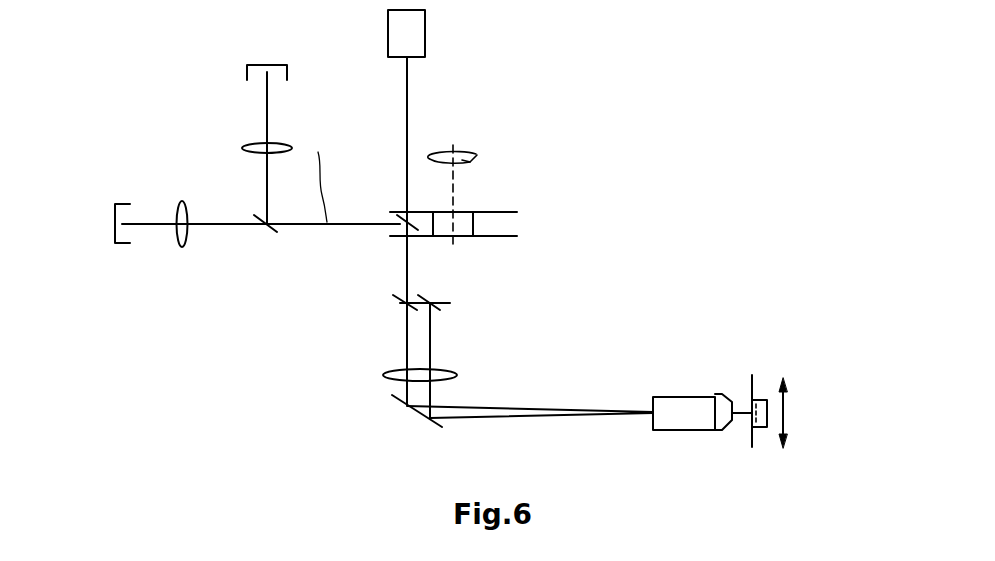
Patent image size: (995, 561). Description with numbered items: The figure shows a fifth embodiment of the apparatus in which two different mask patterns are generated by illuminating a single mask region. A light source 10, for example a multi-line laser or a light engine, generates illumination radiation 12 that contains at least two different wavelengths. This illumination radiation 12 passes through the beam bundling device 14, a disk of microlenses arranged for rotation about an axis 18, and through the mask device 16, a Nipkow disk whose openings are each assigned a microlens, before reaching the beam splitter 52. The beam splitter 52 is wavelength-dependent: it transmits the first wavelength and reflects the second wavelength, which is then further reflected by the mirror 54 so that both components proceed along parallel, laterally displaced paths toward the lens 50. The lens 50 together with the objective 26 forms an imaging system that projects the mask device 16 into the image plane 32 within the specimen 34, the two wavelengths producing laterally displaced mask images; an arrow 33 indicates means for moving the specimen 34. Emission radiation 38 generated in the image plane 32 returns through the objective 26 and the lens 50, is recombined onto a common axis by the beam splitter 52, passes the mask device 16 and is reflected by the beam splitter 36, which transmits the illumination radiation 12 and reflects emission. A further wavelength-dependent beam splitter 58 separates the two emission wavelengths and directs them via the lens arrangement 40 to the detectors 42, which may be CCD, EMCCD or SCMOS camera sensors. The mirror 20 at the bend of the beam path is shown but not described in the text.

The light source 10 is at (395, 40).
The illumination radiation 12 is at (407, 105).
The beam bundling device 14 is at (485, 212).
The mask device 16 is at (425, 238).
The axis 18 is at (465, 158).
The mirror 20 is at (437, 427).
The objective 26 is at (671, 418).
The image plane 32 is at (753, 385).
The arrow 33 is at (788, 416).
The specimen 34 is at (757, 420).
The beam splitter 36 is at (412, 222).
The emission radiation 38 is at (315, 175).
The lens arrangement 40 is at (242, 148).
The detector 42 is at (252, 65).
The lens 50 is at (457, 378).
The beam splitter 52 is at (393, 298).
The mirror 54 is at (450, 303).
The beam splitter 58 is at (275, 234).